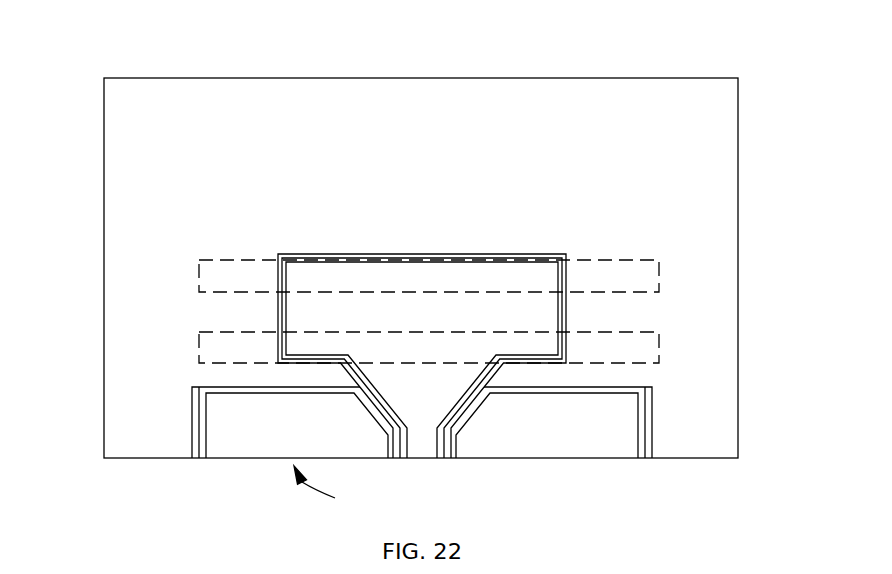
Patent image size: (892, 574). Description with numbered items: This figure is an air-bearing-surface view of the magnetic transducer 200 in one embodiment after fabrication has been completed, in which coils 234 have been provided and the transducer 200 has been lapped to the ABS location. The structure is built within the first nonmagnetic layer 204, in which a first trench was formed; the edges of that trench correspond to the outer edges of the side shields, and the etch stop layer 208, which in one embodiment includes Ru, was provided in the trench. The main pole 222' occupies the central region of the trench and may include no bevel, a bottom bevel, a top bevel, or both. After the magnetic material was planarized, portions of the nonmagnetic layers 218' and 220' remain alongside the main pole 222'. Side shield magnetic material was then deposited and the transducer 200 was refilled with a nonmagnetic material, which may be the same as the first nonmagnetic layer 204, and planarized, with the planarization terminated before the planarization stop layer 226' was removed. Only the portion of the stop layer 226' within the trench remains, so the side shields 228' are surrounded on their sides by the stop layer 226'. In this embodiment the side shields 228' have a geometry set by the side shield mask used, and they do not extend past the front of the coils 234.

The magnetic transducer 200 is at (441, 42).
The first nonmagnetic layer 204 is at (738, 148).
The coils 234 is at (197, 332).
The nonmagnetic layer 218' is at (300, 360).
The main pole 222' is at (296, 323).
The nonmagnetic layer 220' is at (539, 337).
The side shields 228' is at (422, 444).
The etch stop layer 208 is at (195, 458).
The stop layer 226' is at (683, 444).